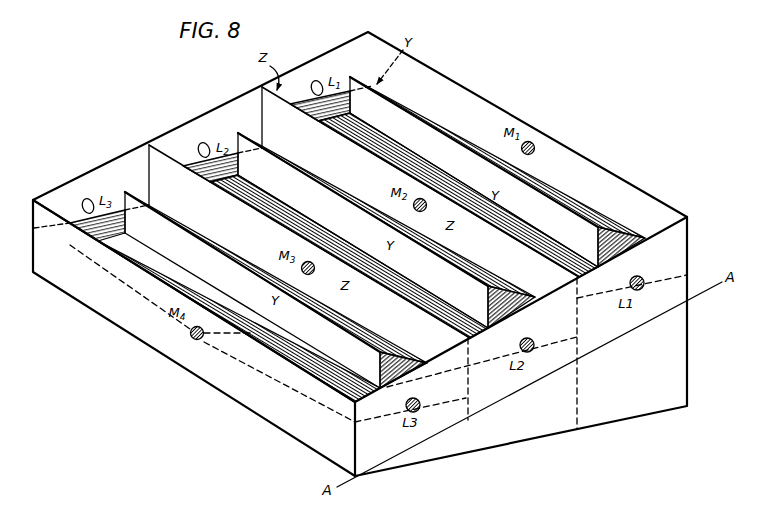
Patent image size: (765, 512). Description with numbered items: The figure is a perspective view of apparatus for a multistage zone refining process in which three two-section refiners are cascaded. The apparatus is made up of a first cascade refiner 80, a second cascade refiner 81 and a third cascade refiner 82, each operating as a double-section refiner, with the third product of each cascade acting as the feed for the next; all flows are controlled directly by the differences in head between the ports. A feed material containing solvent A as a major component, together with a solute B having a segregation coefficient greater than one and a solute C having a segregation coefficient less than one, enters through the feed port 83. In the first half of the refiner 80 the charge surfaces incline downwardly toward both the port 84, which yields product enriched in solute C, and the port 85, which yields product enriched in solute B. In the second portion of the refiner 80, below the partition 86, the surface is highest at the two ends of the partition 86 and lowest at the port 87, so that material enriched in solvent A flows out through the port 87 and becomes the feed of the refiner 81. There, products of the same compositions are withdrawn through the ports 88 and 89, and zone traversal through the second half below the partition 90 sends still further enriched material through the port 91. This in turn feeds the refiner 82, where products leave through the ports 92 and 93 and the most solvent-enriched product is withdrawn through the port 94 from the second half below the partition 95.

The first cascade refiner 80 is at (566, 253).
The second cascade refiner 81 is at (457, 318).
The third cascade refiner 82 is at (327, 395).
The feed port 83 is at (538, 146).
The port 84 is at (644, 285).
The port 85 is at (317, 81).
The partition 86 is at (570, 216).
The port 87 is at (425, 200).
The port 88 is at (203, 143).
The port 89 is at (535, 347).
The partition 90 is at (460, 271).
The port 91 is at (313, 262).
The port 92 is at (85, 203).
The port 93 is at (421, 408).
The port 94 is at (203, 327).
The partition 95 is at (352, 342).